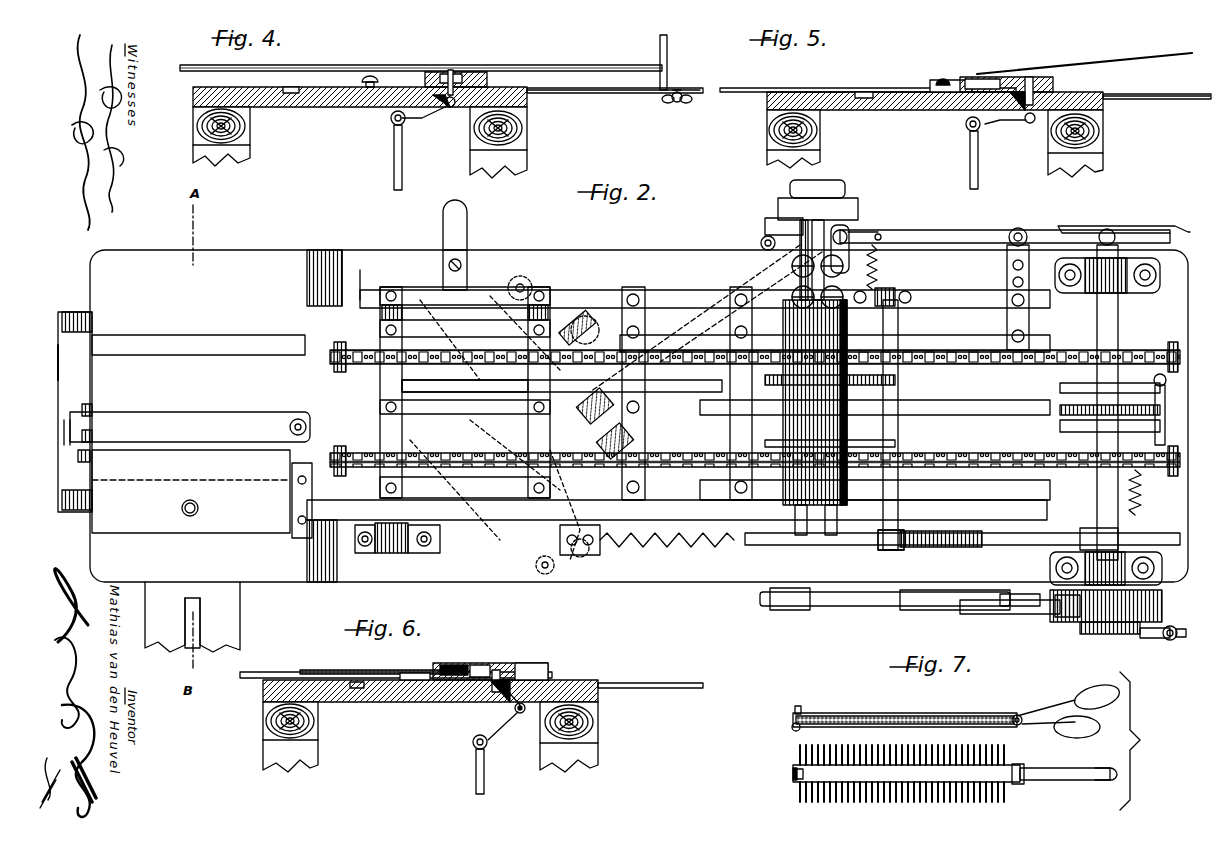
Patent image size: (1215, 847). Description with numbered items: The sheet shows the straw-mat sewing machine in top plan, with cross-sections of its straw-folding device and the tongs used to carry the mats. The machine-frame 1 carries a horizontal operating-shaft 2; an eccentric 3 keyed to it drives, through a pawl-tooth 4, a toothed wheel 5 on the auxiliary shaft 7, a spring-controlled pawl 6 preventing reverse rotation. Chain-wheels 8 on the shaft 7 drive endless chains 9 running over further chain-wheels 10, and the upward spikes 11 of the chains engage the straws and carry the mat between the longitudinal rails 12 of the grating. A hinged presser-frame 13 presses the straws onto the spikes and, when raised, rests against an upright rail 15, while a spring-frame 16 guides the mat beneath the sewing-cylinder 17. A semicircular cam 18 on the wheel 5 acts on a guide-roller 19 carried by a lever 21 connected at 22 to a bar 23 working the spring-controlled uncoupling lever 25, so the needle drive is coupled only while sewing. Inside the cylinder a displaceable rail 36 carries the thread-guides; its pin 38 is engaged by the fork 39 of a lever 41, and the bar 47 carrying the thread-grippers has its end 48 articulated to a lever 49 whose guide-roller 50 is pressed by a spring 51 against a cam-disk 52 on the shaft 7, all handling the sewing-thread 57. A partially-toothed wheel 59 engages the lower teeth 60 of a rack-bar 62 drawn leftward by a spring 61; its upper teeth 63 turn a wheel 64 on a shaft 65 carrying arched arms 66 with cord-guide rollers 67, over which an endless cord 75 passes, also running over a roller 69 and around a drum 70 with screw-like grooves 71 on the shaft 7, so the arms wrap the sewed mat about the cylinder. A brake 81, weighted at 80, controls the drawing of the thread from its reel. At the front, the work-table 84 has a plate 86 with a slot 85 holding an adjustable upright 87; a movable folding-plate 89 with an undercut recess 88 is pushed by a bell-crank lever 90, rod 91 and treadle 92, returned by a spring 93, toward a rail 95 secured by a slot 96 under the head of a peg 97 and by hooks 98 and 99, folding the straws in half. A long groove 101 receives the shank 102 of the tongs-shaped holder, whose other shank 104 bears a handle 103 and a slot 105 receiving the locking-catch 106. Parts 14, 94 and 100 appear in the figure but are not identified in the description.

In FIG. 4, the machine-frame 1 is at (250, 155).
In FIG. 5, the machine-frame 1 is at (822, 137).
In FIG. 2, the machine-frame 1 is at (700, 252).
In FIG. 6, the machine-frame 1 is at (263, 749).
In FIG. 2, the operating-shaft 2 is at (790, 512).
In FIG. 2, the eccentric 3 is at (862, 608).
In FIG. 2, the pawl-tooth 4 is at (1040, 614).
In FIG. 2, the toothed wheel 5 is at (1110, 622).
In FIG. 2, the spring-controlled pawl 6 is at (1068, 617).
In FIG. 2, the auxiliary shaft 7 is at (1120, 300).
In FIG. 2, the chain-wheels 8 is at (1128, 397).
In FIG. 2, the chain 9 is at (686, 364).
In FIG. 2, the chain-wheels 10 is at (338, 360).
In FIG. 2, the spikes 11 is at (328, 350).
In FIG. 2, the rails 12 is at (588, 292).
In FIG. 2, the presser-frame 13 is at (410, 303).
In FIG. 2, the carriage cross bar 14 is at (465, 406).
In FIG. 2, the upright rail 15 is at (467, 238).
In FIG. 2, the spring-frame 16 is at (646, 306).
In FIG. 2, the sewing-cylinder 17 is at (752, 496).
In FIG. 2, the cam 18 is at (1132, 634).
In FIG. 2, the guide-roller 19 is at (1152, 638).
In FIG. 2, the lever 21 is at (1172, 626).
In FIG. 2, the connection point 22 is at (1157, 415).
In FIG. 2, the bar 23 is at (1171, 388).
In FIG. 2, the spring-controlled lever 25 is at (1145, 500).
In FIG. 2, the rail 36 is at (784, 226).
In FIG. 2, the pin 38 is at (829, 251).
In FIG. 2, the fork 39 is at (818, 240).
In FIG. 2, the lever 41 is at (850, 222).
In FIG. 2, the bar 47 is at (886, 288).
In FIG. 2, the end of bar 48 is at (848, 236).
In FIG. 2, the lever 49 is at (958, 238).
In FIG. 2, the guide-roller 50 is at (1106, 228).
In FIG. 2, the spring 51 is at (880, 268).
In FIG. 2, the cam-disk 52 is at (1130, 228).
In FIG. 2, the sewing-thread 57 is at (740, 245).
In FIG. 2, the partially-toothed wheel 59 is at (1060, 540).
In FIG. 2, the lower series of teeth 60 is at (1160, 545).
In FIG. 2, the spring 61 is at (690, 542).
In FIG. 2, the rack-bar 62 is at (1010, 545).
In FIG. 2, the upper series of teeth 63 is at (940, 548).
In FIG. 2, the toothed wheel 64 is at (886, 548).
In FIG. 2, the shaft 65 is at (884, 330).
In FIG. 2, the arched arms 66 is at (830, 417).
In FIG. 2, the cord-guide rollers 67 is at (769, 424).
In FIG. 2, the roller 69 is at (962, 352).
In FIG. 2, the drum 70 is at (1110, 399).
In FIG. 2, the grooves 71 is at (1110, 421).
In FIG. 2, the endless cord 75 is at (941, 425).
In FIG. 2, the weight 80 is at (535, 420).
In FIG. 2, the brake 81 is at (530, 430).
In FIG. 2, the work-table 84 is at (256, 513).
In FIG. 4, the longitudinal slot 85 is at (630, 94).
In FIG. 5, the longitudinal slot 85 is at (1185, 100).
In FIG. 2, the longitudinal slot 85 is at (200, 604).
In FIG. 6, the longitudinal slot 85 is at (645, 688).
In FIG. 4, the plate 86 is at (580, 96).
In FIG. 5, the plate 86 is at (1142, 100).
In FIG. 2, the plate 86 is at (192, 617).
In FIG. 4, the adjustable upright 87 is at (668, 45).
In FIG. 4, the undercut recess 88 is at (392, 108).
In FIG. 5, the undercut recess 88 is at (958, 110).
In FIG. 2, the undercut recess 88 is at (218, 466).
In FIG. 6, the undercut recess 88 is at (462, 700).
In FIG. 4, the folding-plate 89 is at (448, 72).
In FIG. 5, the folding-plate 89 is at (1012, 76).
In FIG. 2, the folding-plate 89 is at (255, 546).
In FIG. 6, the folding-plate 89 is at (484, 663).
In FIG. 4, the bell-crank lever 90 is at (445, 112).
In FIG. 5, the bell-crank lever 90 is at (1020, 118).
In FIG. 6, the bell-crank lever 90 is at (510, 706).
In FIG. 4, the rod 91 is at (402, 168).
In FIG. 5, the rod 91 is at (970, 168).
In FIG. 6, the rod 91 is at (484, 778).
In FIG. 2, the treadle 92 is at (73, 451).
In FIG. 2, the spring 93 is at (78, 332).
In FIG. 2, the plate 94 is at (69, 371).
In FIG. 5, the rail 95 is at (932, 86).
In FIG. 2, the rail 95 is at (222, 420).
In FIG. 6, the rail 95 is at (425, 700).
In FIG. 2, the slot 96 is at (306, 427).
In FIG. 4, the peg 97 is at (370, 78).
In FIG. 5, the peg 97 is at (944, 83).
In FIG. 2, the peg 97 is at (290, 428).
In FIG. 2, the hook 98 is at (92, 408).
In FIG. 2, the catch 99 is at (92, 436).
In FIG. 2, the lug 100 is at (92, 456).
In FIG. 4, the long groove 101 is at (296, 105).
In FIG. 5, the long groove 101 is at (866, 92).
In FIG. 2, the long groove 101 is at (198, 352).
In FIG. 6, the long groove 101 is at (364, 702).
In FIG. 6, the shank 102 is at (348, 700).
In FIG. 7, the shank 102 is at (800, 730).
In FIG. 7, the handle 103 is at (1110, 707).
In FIG. 6, the shank 104 is at (360, 672).
In FIG. 7, the shank 104 is at (868, 714).
In FIG. 7, the slot 105 is at (790, 773).
In FIG. 7, the locking-catch 106 is at (800, 706).